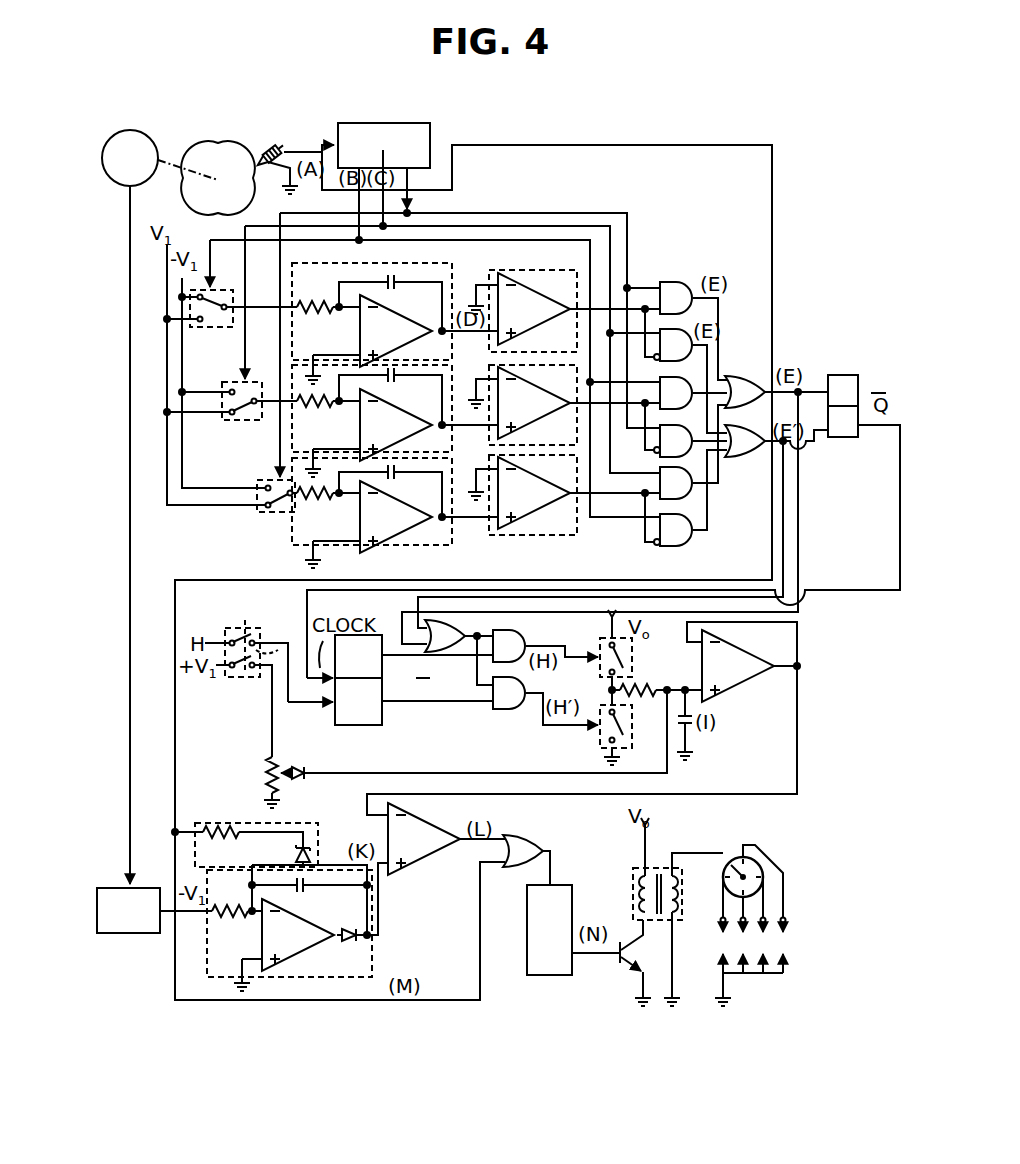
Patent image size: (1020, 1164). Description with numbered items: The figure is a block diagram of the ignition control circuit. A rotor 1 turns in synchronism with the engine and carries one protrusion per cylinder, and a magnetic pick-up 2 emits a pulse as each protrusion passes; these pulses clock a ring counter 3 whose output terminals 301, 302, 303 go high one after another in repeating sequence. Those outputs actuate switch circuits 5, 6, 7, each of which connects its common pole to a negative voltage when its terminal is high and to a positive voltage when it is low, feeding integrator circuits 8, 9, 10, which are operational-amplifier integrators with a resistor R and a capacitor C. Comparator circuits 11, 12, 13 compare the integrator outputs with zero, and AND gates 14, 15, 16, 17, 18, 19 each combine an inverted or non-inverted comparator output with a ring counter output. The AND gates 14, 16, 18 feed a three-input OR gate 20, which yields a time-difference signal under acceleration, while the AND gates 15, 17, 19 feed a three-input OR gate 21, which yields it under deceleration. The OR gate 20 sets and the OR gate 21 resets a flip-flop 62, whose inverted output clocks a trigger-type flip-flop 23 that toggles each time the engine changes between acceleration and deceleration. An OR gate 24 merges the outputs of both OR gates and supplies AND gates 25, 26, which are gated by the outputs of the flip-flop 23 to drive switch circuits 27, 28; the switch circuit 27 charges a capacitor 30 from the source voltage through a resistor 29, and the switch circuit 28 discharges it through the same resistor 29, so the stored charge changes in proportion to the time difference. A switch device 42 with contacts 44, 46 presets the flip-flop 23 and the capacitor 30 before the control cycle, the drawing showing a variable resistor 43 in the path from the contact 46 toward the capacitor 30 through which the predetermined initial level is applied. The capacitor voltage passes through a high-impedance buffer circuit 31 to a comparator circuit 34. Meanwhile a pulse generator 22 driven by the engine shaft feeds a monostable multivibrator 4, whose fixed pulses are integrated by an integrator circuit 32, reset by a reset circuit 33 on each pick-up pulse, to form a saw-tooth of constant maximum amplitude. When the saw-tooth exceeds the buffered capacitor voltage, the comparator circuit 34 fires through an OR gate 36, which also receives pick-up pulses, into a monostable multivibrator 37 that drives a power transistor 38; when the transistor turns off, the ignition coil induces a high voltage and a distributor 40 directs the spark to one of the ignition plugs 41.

The rotor 1 is at (240, 189).
The magnetic pick-up 2 is at (272, 141).
The ring counter 3 is at (384, 128).
The output terminal 301 is at (359, 158).
The output terminal 302 is at (384, 137).
The output terminal 303 is at (407, 158).
The monostable multivibrator 4 is at (147, 888).
The switch circuit 5 is at (226, 290).
The switch circuit 6 is at (260, 385).
The switch circuit 7 is at (274, 481).
The integrator circuit 8 is at (448, 278).
The integrator circuit 9 is at (448, 380).
The integrator circuit 10 is at (446, 545).
The comparator circuit 11 is at (530, 270).
The comparator circuit 12 is at (558, 411).
The comparator circuit 13 is at (540, 535).
The AND gate 14 is at (671, 283).
The AND gate 15 is at (706, 329).
The AND gate 16 is at (678, 382).
The AND gate 17 is at (678, 430).
The AND gate 18 is at (658, 471).
The AND gate 19 is at (696, 540).
The three-input OR gate 20 is at (742, 380).
The three-input OR gate 21 is at (742, 455).
The pulse generator 22 is at (150, 123).
The trigger-type flip-flop 23 is at (370, 725).
The OR gate 24 is at (450, 625).
The AND gate 25 is at (514, 635).
The AND gate 26 is at (545, 708).
The switch circuit 27 is at (600, 646).
The switch circuit 28 is at (632, 728).
The resistor 29 is at (656, 688).
The capacitor 30 is at (690, 744).
The buffer circuit 31 is at (746, 684).
The integrator circuit 32 is at (375, 945).
The reset circuit 33 is at (237, 823).
The comparator circuit 34 is at (438, 826).
The OR gate 36 is at (506, 868).
The monostable multivibrator 37 is at (573, 907).
The power transistor 38 is at (630, 959).
The distributor 40 is at (740, 874).
The ignition plugs 41 is at (772, 945).
The switch device 42 is at (245, 635).
The variable resistor 43 is at (266, 782).
The contact 44 is at (274, 652).
The contact 46 is at (240, 677).
The flip-flop 62 is at (838, 375).